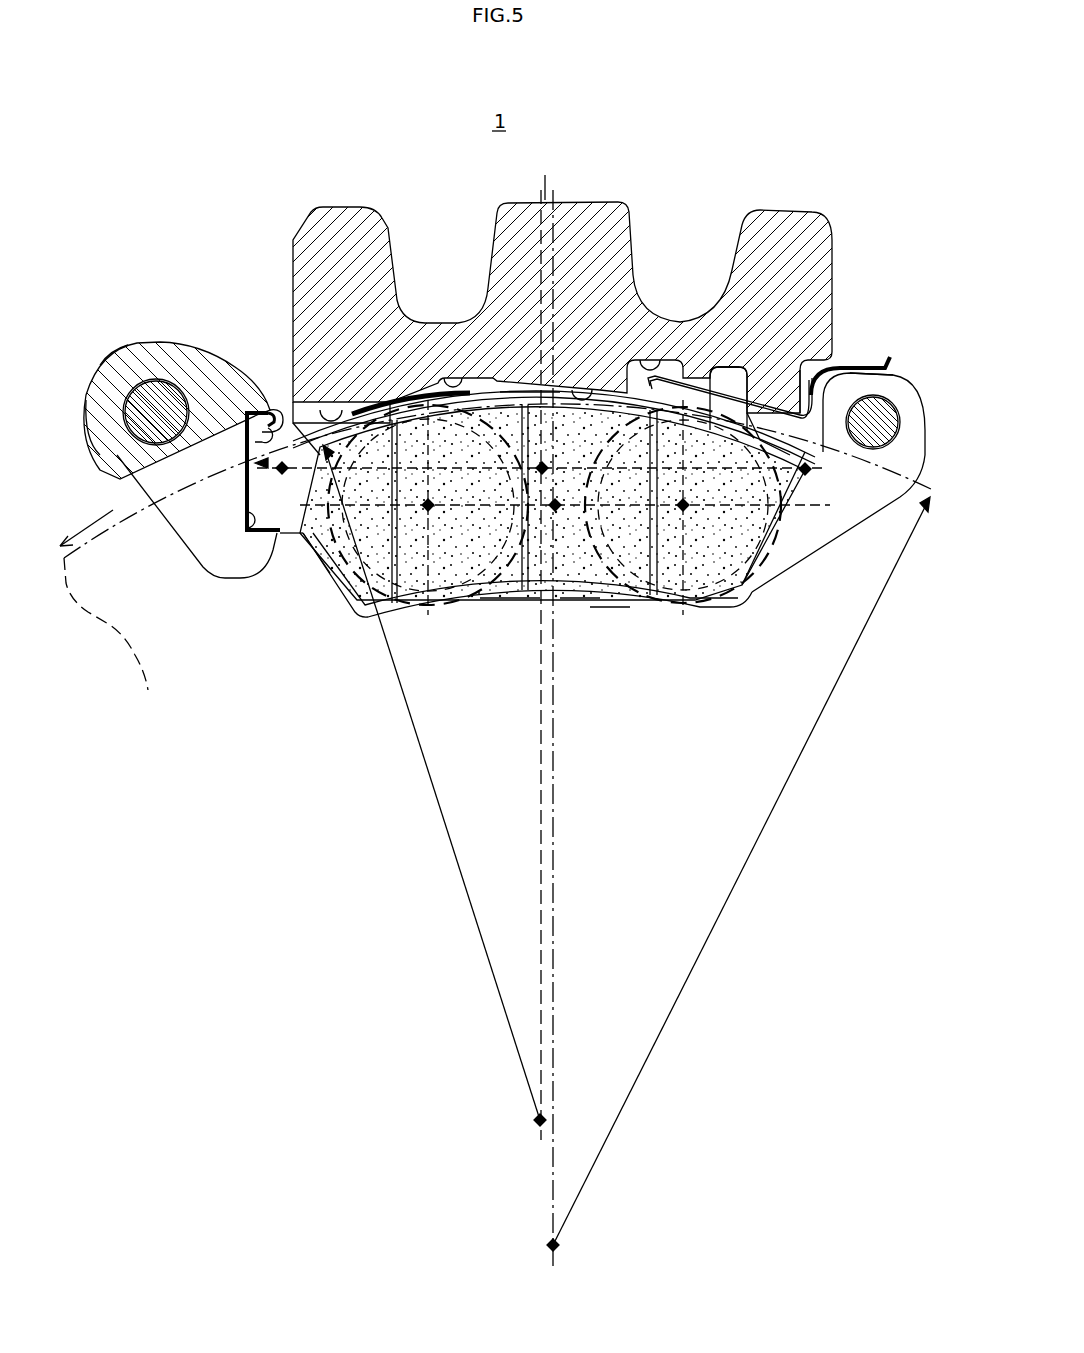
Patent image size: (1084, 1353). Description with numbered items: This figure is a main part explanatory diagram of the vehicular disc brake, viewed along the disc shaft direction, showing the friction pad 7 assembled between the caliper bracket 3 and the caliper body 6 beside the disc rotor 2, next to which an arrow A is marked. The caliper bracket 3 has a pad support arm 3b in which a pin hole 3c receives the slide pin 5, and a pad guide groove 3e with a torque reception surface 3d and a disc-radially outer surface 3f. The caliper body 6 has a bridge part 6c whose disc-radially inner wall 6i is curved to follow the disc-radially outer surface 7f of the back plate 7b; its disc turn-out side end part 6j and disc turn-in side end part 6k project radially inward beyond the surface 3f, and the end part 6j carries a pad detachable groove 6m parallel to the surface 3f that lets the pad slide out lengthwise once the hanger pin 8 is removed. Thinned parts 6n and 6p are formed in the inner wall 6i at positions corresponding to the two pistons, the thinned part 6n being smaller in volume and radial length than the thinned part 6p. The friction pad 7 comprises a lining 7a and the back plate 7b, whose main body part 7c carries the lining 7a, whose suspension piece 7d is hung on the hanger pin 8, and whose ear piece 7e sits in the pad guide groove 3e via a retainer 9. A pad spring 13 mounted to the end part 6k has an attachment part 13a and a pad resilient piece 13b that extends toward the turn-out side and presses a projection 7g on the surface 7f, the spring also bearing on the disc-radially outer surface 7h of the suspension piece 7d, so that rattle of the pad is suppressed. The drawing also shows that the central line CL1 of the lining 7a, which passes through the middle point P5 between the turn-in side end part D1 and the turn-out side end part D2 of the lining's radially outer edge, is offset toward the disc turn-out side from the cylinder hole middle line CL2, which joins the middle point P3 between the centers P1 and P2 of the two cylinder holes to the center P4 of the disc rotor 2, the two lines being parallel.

The disc rotor 2 is at (112, 615).
The caliper bracket 3 is at (221, 350).
The pad support arm 3b is at (118, 358).
The pin hole 3c is at (96, 426).
The torque reception surface 3d is at (244, 521).
The pad guide groove 3e is at (244, 452).
The disc-radially outer surface of pad guide groove 3f is at (270, 408).
The slide pin 5 is at (158, 383).
The caliper body 6 is at (792, 186).
The bridge part 6c is at (539, 175).
The disc-radially inner wall 6i is at (582, 392).
The disc turn-out side end part 6j is at (320, 450).
The disc turn-in side end part 6k is at (748, 423).
The pad detachable groove 6m is at (331, 408).
The thinned part 6n is at (453, 378).
The thinned part 6p is at (648, 360).
The friction pad 7 is at (642, 671).
The lining 7a is at (578, 600).
The back plate 7b is at (604, 600).
The main body part 7c is at (508, 600).
The suspension piece 7d is at (905, 402).
The ear piece 7e is at (293, 535).
The disc-radially outer surface of back plate 7f is at (520, 392).
The projection 7g is at (688, 398).
The disc-radially outer surface of suspension piece 7h is at (900, 373).
The hanger pin 8 is at (888, 420).
The retainer 9 is at (240, 580).
The pad spring 13 is at (860, 366).
The attachment part 13a is at (772, 410).
The pad resilient piece 13b is at (735, 392).
The rotor rotation direction A is at (77, 538).
The center of large-diameter cylinder hole P1 is at (432, 504).
The center of small-diameter cylinder hole P2 is at (686, 507).
The middle point P3 is at (557, 502).
The center of disc rotor P4 is at (557, 1247).
The middle point P5 is at (538, 465).
The disc turn-in side end part D1 is at (810, 473).
The disc turn-out side end part D2 is at (250, 482).
The central line CL1 is at (540, 790).
The cylinder hole middle line CL2 is at (555, 808).